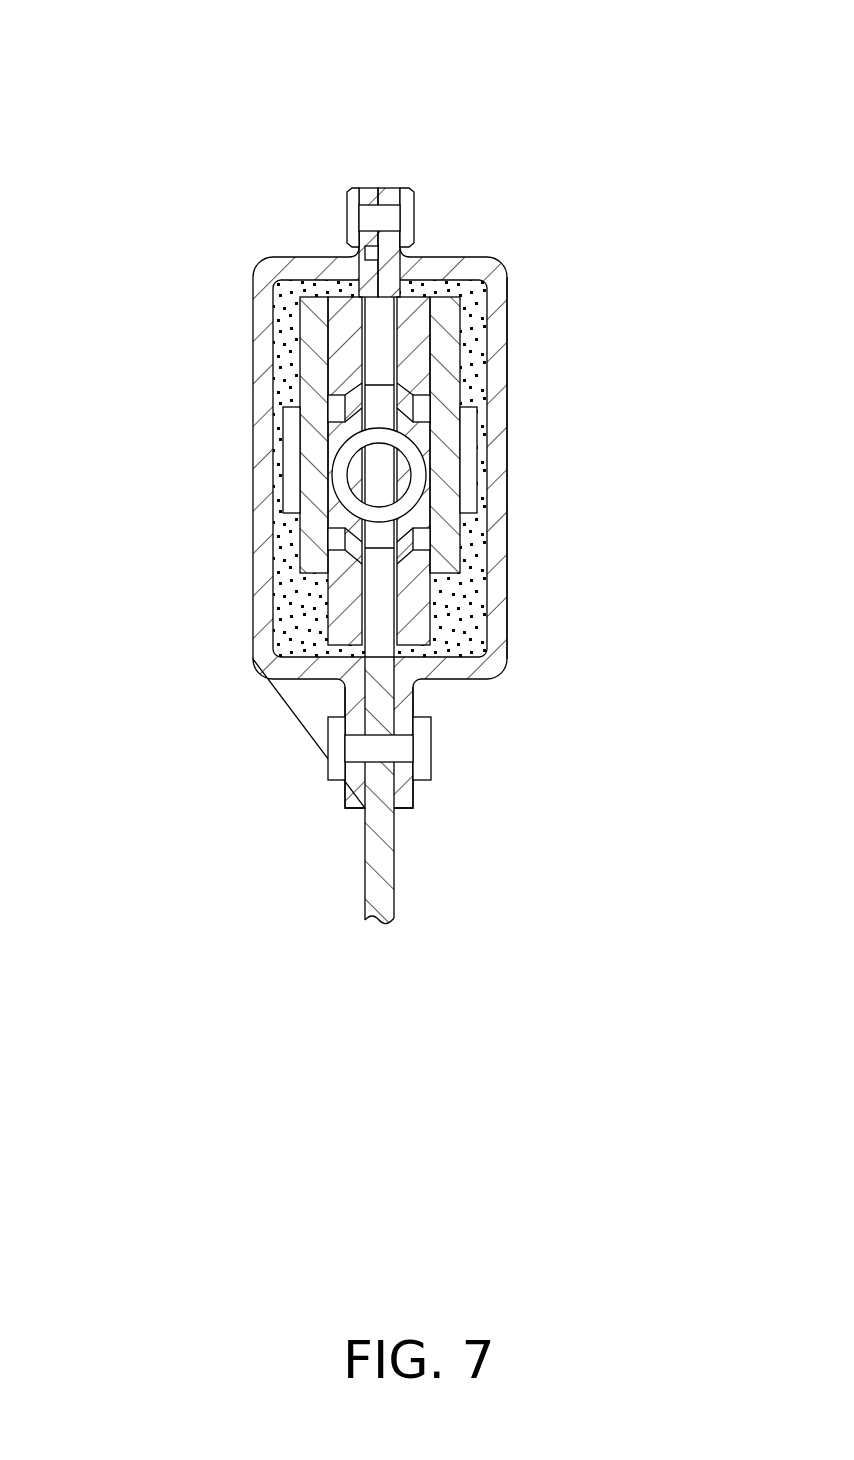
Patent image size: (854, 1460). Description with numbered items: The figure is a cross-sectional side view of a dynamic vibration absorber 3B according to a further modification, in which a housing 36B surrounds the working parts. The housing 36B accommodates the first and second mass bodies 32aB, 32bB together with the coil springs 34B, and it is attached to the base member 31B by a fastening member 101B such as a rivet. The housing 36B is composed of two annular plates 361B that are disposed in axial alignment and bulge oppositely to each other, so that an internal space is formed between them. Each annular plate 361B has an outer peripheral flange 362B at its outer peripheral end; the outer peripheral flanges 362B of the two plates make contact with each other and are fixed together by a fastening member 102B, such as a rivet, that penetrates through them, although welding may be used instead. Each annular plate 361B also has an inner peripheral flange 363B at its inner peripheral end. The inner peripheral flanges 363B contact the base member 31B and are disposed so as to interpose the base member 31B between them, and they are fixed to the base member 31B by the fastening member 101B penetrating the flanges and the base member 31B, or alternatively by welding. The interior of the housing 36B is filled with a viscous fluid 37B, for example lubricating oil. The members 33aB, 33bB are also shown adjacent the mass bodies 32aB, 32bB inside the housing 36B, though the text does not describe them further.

The dynamic vibration absorber 3B is at (525, 107).
The base member 31B is at (394, 860).
The first mass body 32aB is at (345, 300).
The second mass body 32bB is at (413, 300).
The first insulating block 33aB is at (305, 350).
The second insulating block 33bB is at (455, 360).
The coil spring 34B is at (416, 467).
The housing 36B is at (507, 260).
The annular plate 361B is at (253, 520).
The outer peripheral flange 362B is at (392, 188).
The inner peripheral flange 363B is at (347, 790).
The viscous fluid 37B is at (465, 627).
The fastening member 101B is at (432, 752).
The fastening member 102B is at (345, 195).